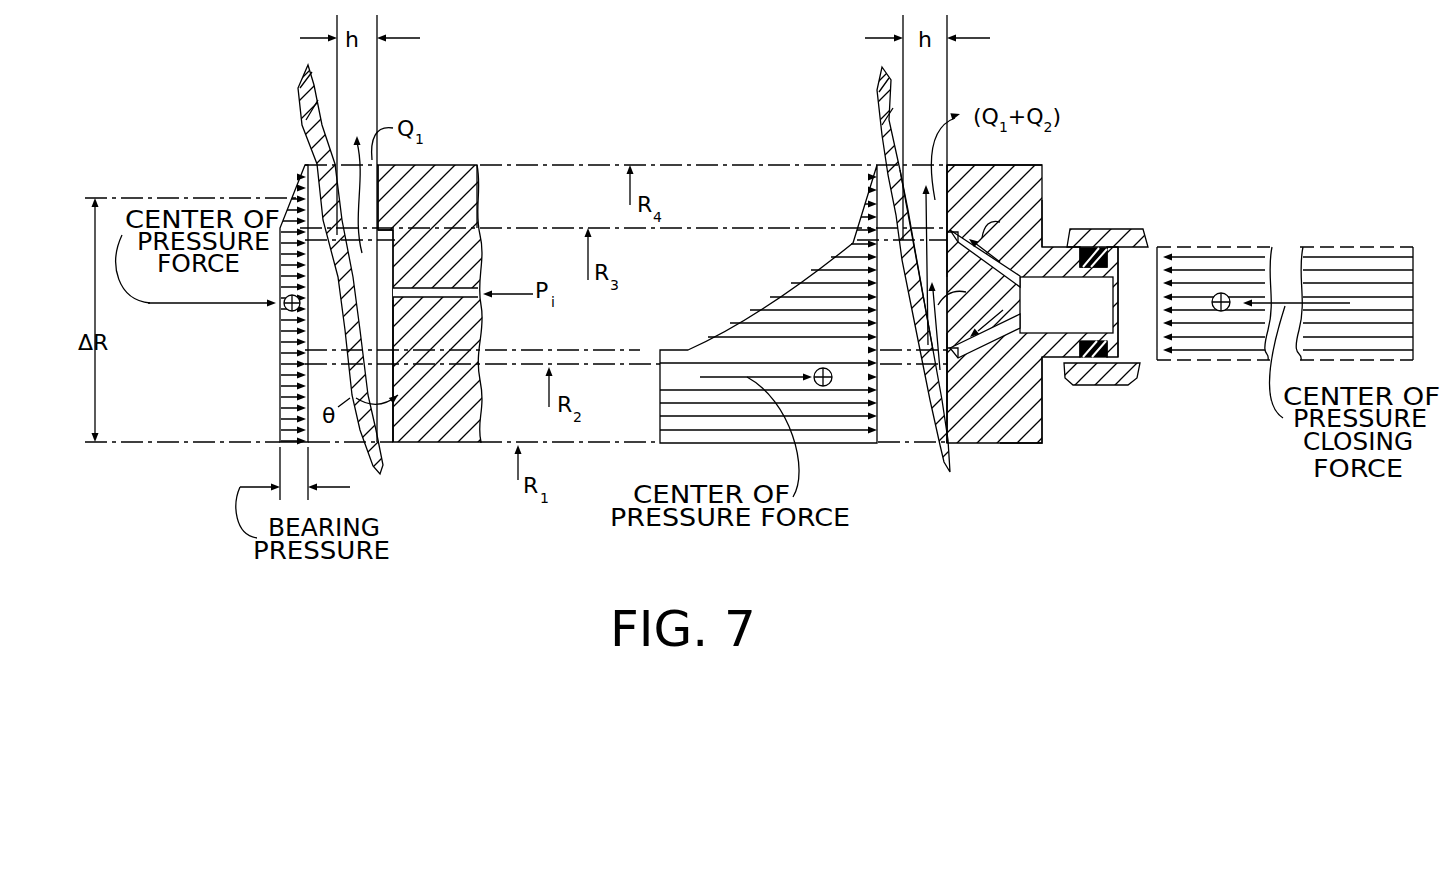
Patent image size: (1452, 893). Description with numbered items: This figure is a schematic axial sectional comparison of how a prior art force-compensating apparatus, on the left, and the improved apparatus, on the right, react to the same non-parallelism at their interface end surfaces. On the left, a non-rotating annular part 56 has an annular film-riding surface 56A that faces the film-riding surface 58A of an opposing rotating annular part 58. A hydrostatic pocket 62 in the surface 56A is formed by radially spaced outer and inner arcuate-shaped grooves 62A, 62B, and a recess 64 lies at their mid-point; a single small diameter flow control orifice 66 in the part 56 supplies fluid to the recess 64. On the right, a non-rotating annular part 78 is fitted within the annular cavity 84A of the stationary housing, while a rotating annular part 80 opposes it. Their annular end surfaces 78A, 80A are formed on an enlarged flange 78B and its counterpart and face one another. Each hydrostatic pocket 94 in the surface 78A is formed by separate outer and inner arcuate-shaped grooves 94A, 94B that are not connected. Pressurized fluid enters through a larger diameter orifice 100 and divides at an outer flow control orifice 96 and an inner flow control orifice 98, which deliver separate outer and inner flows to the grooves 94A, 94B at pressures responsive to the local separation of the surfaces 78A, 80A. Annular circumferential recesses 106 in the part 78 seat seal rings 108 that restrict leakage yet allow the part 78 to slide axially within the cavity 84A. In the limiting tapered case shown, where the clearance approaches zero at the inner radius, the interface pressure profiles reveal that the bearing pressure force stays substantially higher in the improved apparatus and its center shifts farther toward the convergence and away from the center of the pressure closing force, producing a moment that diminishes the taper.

The non-rotating annular part 56 is at (428, 165).
The annular film-riding surface 56A is at (405, 178).
The rotating annular part 58 is at (380, 477).
The film-riding surface 58A is at (312, 75).
The hydrostatic pocket 62 is at (410, 240).
The outer arcuate-shaped groove 62A is at (480, 188).
The inner arcuate-shaped groove 62B is at (396, 393).
The recess 64 is at (395, 378).
The flow control orifice 66 is at (458, 296).
The non-rotating annular part 78 is at (1071, 305).
The annular end surface 78A is at (937, 172).
The enlarged flange 78B is at (1017, 165).
The rotating annular part 80 is at (942, 468).
The annular end surface 80A is at (890, 75).
The annular recess or cavity 84A is at (1125, 357).
The hydrostatic pocket 94 is at (940, 385).
The outer arcuate-shaped groove 94A is at (952, 228).
The inner arcuate-shaped groove 94B is at (958, 440).
The outer flow control orifice 96 is at (1036, 228).
The inner flow control orifice 98 is at (1044, 440).
The larger diameter orifice 100 is at (1110, 303).
The annular circumferential recess 106 is at (1148, 232).
The seal ring 108 is at (1097, 248).